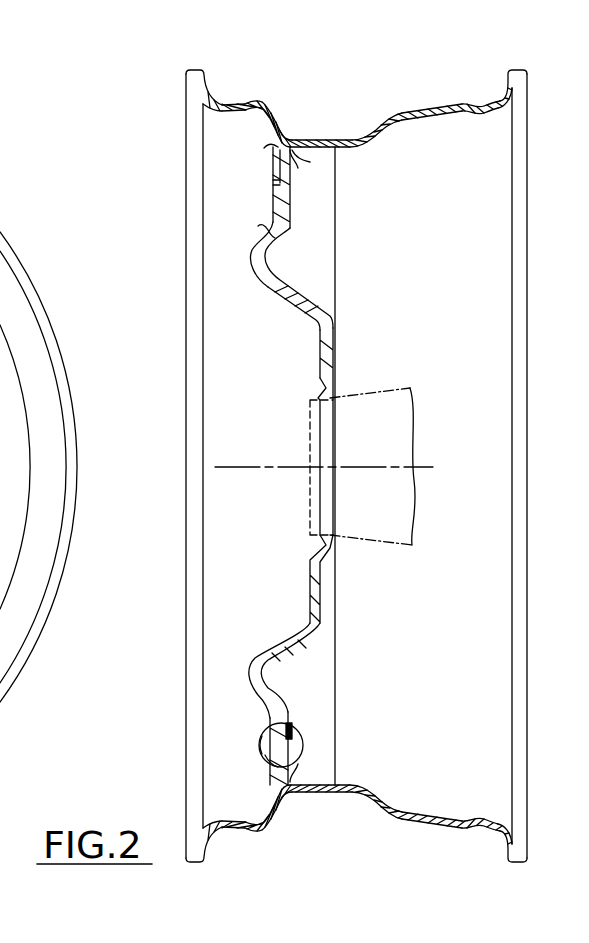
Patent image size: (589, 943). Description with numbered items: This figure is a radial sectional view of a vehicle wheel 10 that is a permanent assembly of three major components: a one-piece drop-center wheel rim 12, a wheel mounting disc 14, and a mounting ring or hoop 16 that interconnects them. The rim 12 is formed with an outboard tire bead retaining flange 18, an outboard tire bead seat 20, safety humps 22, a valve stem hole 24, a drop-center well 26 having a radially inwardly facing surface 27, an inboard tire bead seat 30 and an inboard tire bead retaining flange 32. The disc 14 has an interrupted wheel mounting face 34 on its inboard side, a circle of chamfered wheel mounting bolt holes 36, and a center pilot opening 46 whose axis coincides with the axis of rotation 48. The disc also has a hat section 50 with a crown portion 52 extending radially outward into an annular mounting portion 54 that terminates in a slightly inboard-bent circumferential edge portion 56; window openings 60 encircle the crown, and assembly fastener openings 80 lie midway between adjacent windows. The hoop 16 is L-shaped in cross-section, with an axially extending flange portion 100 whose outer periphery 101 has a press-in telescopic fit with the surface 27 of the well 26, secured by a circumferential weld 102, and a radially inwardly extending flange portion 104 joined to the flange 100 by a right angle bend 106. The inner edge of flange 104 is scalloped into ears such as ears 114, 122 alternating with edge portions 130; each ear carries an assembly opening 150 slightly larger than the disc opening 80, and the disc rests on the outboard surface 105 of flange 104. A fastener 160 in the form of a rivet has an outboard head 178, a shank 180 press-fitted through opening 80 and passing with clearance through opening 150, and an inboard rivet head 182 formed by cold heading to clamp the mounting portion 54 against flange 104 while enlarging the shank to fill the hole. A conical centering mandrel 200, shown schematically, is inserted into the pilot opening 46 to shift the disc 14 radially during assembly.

The vehicle wheel 10 is at (162, 78).
The wheel rim 12 is at (399, 108).
The wheel mounting disc 14 is at (245, 253).
The mounting ring or hoop 16 is at (338, 179).
The outboard tire bead retaining flange 18 is at (206, 78).
The outboard tire bead seat 20 is at (230, 101).
The safety humps 22 is at (268, 105).
The valve stem hole 24 is at (283, 127).
The drop-center well 26 is at (335, 146).
The radially inwardly facing surface 27 is at (350, 788).
The inboard tire bead seat 30 is at (484, 100).
The inboard tire bead retaining flange 32 is at (522, 71).
The wheel mounting face 34 is at (338, 352).
The wheel mounting bolt hole 36 is at (320, 373).
The center pilot opening 46 is at (328, 397).
The axis of rotation 48 is at (420, 467).
The hat section 50 is at (288, 300).
The crown portion 52 is at (254, 270).
The annular mounting portion 54 is at (275, 178).
The circumferential edge portion 56 is at (278, 148).
The window opening 60 is at (270, 236).
The assembly fastener opening 80 is at (262, 733).
The axially extending flange portion 100 is at (322, 153).
The outer periphery 101 is at (333, 800).
The weld 102 is at (344, 144).
The radially inwardly extending flange portion 104 is at (297, 170).
The outboard surface 105 is at (279, 165).
The right angle bend 106 is at (298, 157).
The scallop ear 114 is at (286, 720).
The scallop ear 122 is at (286, 224).
The circumferentially extending edge portion 130 is at (278, 180).
The assembly opening 150 is at (305, 720).
The fastener 160 is at (262, 750).
The outboard head 178 is at (260, 743).
The shank 180 is at (280, 758).
The inboard rivet head 182 is at (292, 735).
The conical centering mandrel 200 is at (386, 393).